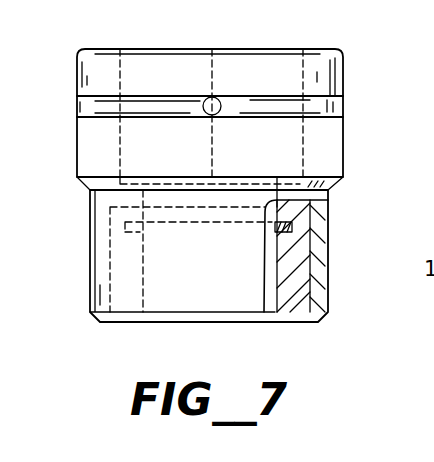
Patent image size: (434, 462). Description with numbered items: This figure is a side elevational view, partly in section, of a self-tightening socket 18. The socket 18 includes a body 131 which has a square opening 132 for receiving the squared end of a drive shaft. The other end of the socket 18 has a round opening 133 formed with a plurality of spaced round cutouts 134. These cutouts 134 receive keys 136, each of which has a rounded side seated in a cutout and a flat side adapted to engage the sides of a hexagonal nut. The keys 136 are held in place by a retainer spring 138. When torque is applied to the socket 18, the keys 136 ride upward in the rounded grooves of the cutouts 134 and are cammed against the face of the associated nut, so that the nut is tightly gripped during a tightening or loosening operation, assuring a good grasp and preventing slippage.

The body 131 is at (178, 70).
The square opening 132 is at (301, 80).
The round opening 133 is at (143, 197).
The round cutouts 134 is at (305, 265).
The keys 136 is at (289, 310).
The retainer spring 138 is at (283, 228).
The self-tightening socket 18 is at (115, 322).